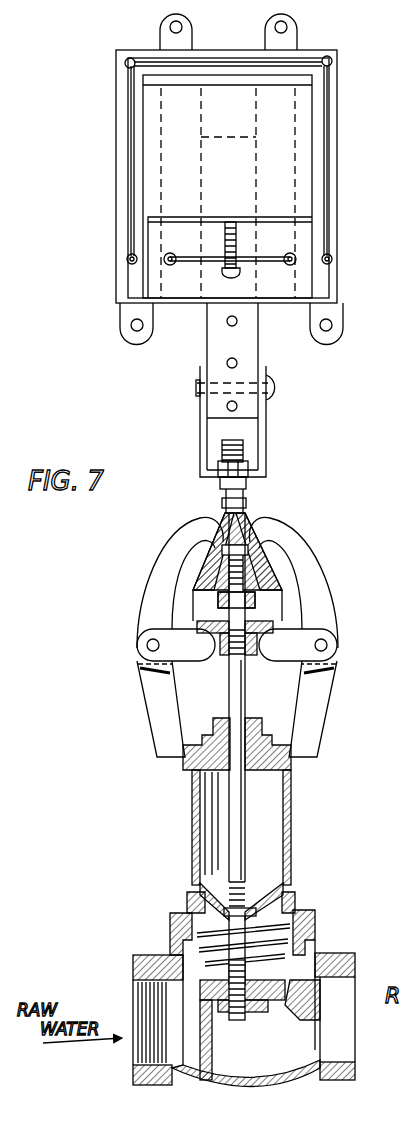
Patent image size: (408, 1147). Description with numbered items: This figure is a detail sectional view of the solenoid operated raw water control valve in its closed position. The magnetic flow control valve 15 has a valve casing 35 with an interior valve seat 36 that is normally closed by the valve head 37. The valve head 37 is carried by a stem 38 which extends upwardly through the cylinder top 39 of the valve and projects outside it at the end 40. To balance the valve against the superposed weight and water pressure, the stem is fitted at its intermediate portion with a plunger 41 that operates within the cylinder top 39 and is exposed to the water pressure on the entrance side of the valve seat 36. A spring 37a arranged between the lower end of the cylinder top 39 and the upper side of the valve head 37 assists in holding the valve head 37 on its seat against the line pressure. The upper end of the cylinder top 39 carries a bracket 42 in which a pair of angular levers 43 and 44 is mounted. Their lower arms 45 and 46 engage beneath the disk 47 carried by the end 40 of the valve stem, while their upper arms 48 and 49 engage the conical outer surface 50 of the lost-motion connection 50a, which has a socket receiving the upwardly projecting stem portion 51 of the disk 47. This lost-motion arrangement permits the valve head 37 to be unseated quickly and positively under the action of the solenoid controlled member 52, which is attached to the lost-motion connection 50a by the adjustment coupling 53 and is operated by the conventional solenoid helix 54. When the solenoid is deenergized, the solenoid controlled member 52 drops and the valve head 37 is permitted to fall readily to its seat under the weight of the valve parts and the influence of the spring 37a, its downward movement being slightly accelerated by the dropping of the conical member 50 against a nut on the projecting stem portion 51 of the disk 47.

The solenoid helix 54 is at (208, 163).
The solenoid controlled member 52 is at (216, 350).
The adjustment coupling 53 is at (210, 448).
The lost-motion connection 50a is at (247, 505).
The conical outer surface 50 is at (270, 569).
The upper arm 48 is at (211, 551).
The upper arm 49 is at (263, 551).
The stem portion 51 is at (232, 574).
The angular lever 43 is at (150, 611).
The angular lever 44 is at (323, 597).
The disk 47 is at (248, 612).
The lower arm 45 is at (214, 662).
The lower arm 46 is at (269, 664).
The bracket 42 is at (153, 708).
The exteriorly projecting end of the valve stem 40 is at (234, 709).
The stem 38 is at (250, 816).
The cylinder top 39 is at (291, 862).
The magnetic flow control valve 15 is at (182, 823).
The plunger 41 is at (206, 893).
The spring 37a is at (176, 940).
The valve head 37 is at (260, 990).
The valve seat 36 is at (273, 1003).
The valve casing 35 is at (274, 1090).